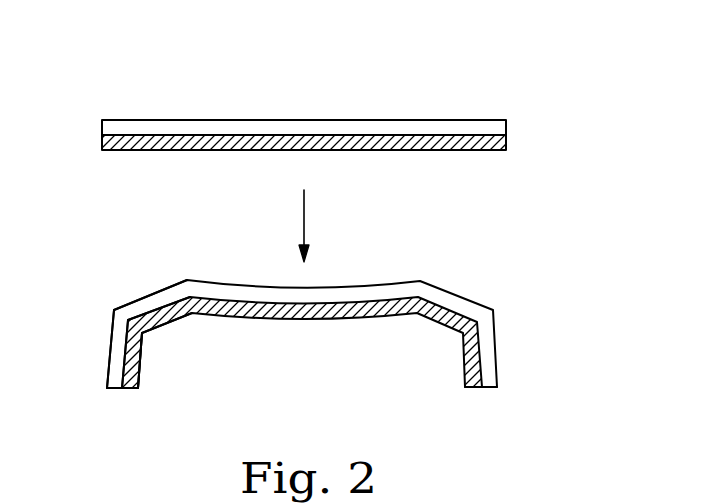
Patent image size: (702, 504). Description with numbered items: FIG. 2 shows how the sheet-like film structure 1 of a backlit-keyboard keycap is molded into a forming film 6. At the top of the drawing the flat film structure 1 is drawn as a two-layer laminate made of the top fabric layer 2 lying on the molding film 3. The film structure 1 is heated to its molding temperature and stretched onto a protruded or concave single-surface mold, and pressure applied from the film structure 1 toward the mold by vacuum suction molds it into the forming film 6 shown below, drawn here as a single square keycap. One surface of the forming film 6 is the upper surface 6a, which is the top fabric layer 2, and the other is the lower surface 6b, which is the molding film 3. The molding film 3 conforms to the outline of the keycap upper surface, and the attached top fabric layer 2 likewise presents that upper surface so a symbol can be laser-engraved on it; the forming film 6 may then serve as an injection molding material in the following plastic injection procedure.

The film structure 1 is at (295, 238).
The top fabric layer 2 is at (506, 127).
The molding film 3 is at (506, 143).
The forming film 6 is at (112, 342).
The upper surface 6a is at (148, 297).
The lower surface 6b is at (142, 357).